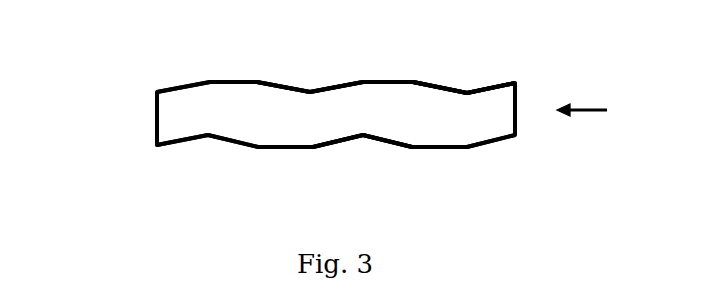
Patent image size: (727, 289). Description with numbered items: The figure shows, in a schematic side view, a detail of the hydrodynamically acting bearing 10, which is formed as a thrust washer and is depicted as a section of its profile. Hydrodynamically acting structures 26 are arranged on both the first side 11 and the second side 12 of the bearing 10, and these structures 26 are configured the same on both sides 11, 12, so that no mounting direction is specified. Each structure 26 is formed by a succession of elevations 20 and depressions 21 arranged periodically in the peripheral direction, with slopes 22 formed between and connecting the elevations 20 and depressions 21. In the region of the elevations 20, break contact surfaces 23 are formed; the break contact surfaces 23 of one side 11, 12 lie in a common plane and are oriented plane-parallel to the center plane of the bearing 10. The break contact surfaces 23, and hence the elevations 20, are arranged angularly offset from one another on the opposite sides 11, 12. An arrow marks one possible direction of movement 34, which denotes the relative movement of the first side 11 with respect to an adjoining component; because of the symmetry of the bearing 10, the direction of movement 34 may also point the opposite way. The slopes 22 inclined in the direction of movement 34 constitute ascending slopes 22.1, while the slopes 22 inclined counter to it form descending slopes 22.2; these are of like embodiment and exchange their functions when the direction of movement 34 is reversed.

The hydrodynamically acting bearing 10 is at (105, 68).
The first side 11 is at (172, 63).
The second side 12 is at (193, 170).
The elevation 20 is at (228, 83).
The depression 21 is at (311, 90).
The slope 22 is at (452, 87).
The ascending slope 22.1 is at (505, 81).
The descending slope 22.2 is at (437, 86).
The break contact surface 23 is at (372, 82).
The hydrodynamically acting structure 26 is at (295, 75).
The direction of movement 34 is at (585, 108).